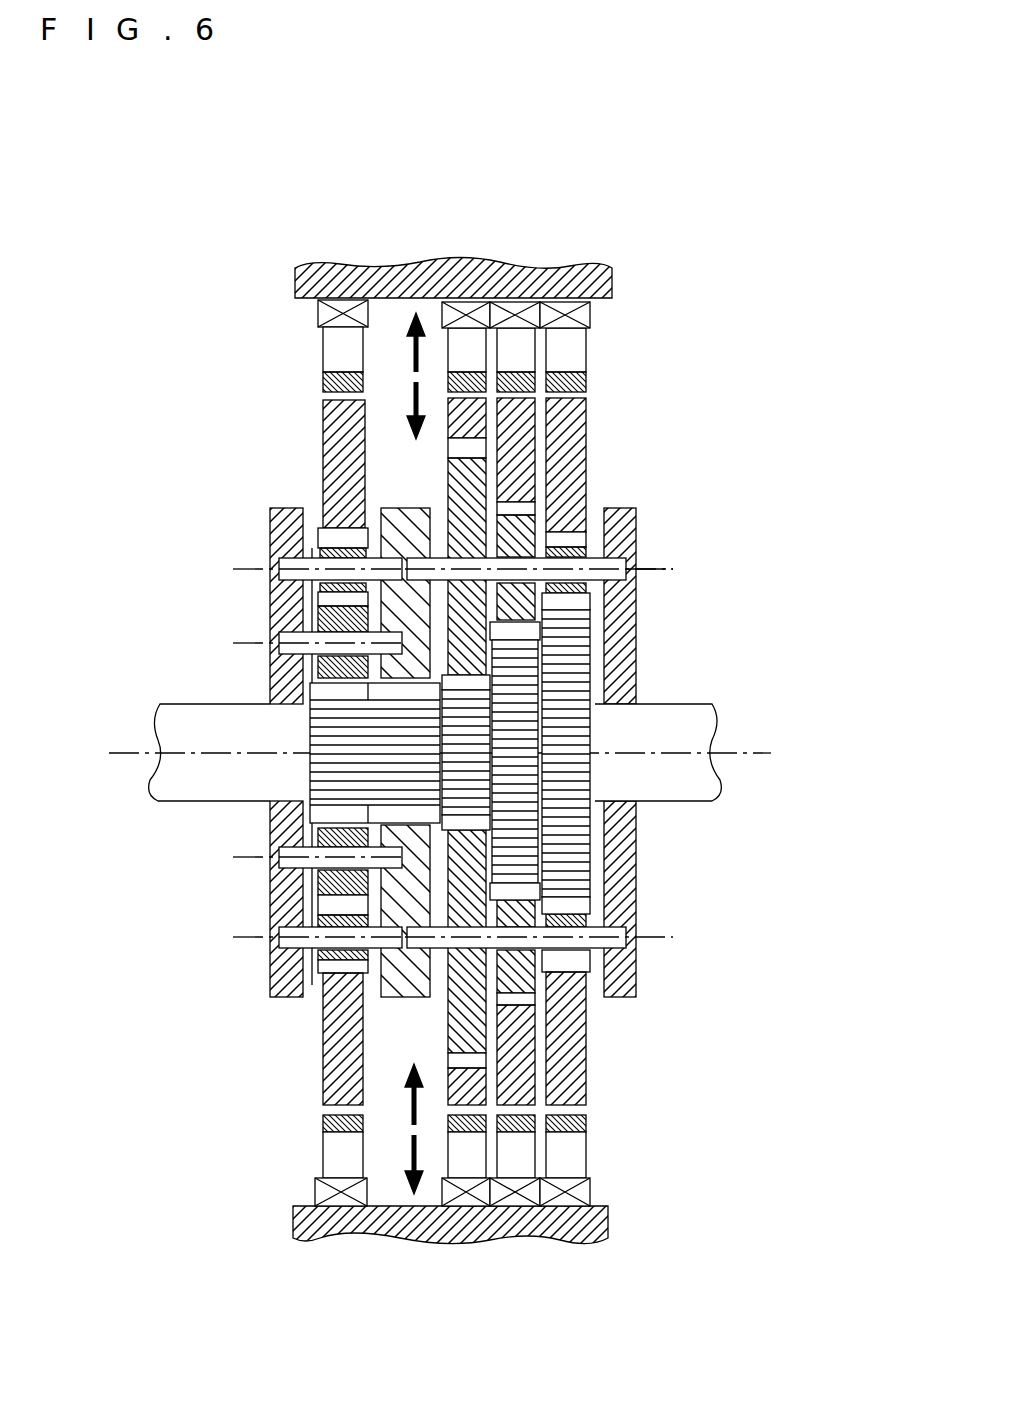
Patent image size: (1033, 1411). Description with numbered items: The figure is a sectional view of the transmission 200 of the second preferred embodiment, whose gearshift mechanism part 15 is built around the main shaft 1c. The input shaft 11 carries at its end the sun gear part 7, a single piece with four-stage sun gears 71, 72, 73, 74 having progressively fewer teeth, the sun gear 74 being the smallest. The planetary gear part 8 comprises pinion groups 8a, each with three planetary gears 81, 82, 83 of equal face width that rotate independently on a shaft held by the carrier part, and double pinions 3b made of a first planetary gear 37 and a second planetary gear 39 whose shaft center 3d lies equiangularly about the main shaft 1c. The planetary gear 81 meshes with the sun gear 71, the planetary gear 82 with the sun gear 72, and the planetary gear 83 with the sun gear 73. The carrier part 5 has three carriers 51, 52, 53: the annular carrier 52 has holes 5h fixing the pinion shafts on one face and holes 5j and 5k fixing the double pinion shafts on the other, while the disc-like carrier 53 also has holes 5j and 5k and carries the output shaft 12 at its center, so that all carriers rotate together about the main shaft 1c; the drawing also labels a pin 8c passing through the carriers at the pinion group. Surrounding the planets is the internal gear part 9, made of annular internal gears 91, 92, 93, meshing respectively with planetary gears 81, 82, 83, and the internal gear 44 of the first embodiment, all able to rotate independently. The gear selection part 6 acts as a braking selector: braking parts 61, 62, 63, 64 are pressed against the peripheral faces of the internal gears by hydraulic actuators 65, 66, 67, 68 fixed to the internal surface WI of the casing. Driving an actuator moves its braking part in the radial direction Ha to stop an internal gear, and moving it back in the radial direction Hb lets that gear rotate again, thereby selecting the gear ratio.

The transmission 200 is at (208, 143).
The internal surface of the casing WI is at (332, 264).
The carrier 53 is at (272, 510).
The carrier 51 is at (636, 510).
The second planetary gear 39 is at (310, 1002).
The output shaft 12 is at (180, 704).
The input shaft 11 is at (670, 704).
The main shaft 1c is at (750, 755).
The actuator 68 is at (318, 312).
The braking part 64 is at (323, 352).
The internal gear 44 is at (323, 408).
The internal gear part 9 is at (175, 390).
The double pinion 3b is at (289, 1052).
The radial direction Ha is at (410, 403).
The radial direction Hb is at (404, 350).
The carrier 52 is at (381, 512).
The internal gear 93 is at (446, 400).
The planetary gear 83 is at (446, 1010).
The internal gear 92 is at (538, 402).
The planetary gear 82 is at (513, 1008).
The braking part 61 is at (587, 346).
The internal gear 91 is at (587, 438).
The planetary gear 81 is at (567, 985).
The sun gear 73 is at (455, 732).
The sun gear 74 is at (303, 770).
The sun gear 72 is at (527, 813).
The sun gear 71 is at (578, 860).
The sun gear part 7 is at (605, 774).
The hole 5k is at (260, 550).
The pin 8c is at (655, 562).
The hole 5h is at (656, 566).
The hole 5j is at (260, 624).
The shaft center 3d is at (240, 858).
The first planetary gear 37 is at (312, 882).
The pinion group 8a is at (664, 962).
The planetary gear part 8 is at (664, 1012).
The actuator 67 is at (468, 308).
The actuator 66 is at (518, 308).
The actuator 65 is at (592, 318).
The braking part 63 is at (470, 1170).
The braking part 62 is at (523, 1170).
The gear selection part 6 is at (719, 322).
The gearshift mechanism part 15 is at (764, 380).
The carrier part 5 is at (772, 480).